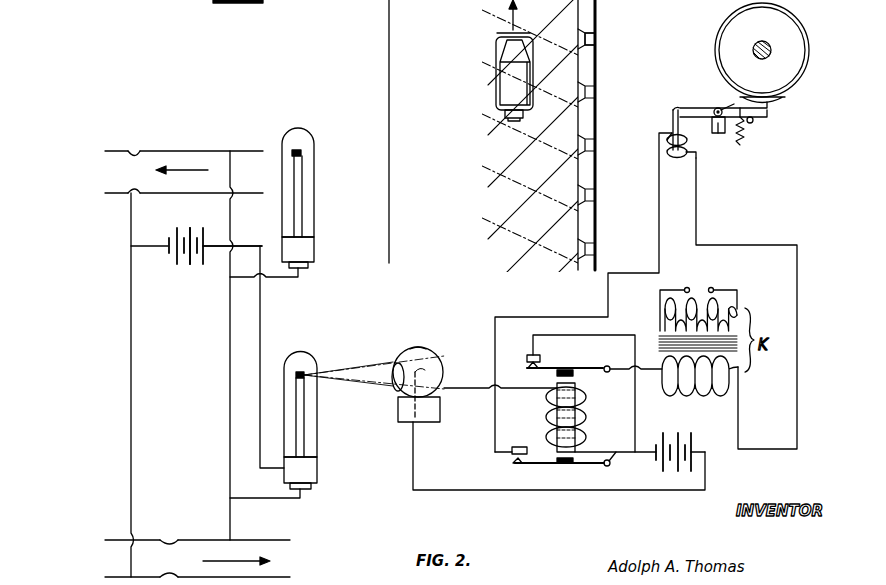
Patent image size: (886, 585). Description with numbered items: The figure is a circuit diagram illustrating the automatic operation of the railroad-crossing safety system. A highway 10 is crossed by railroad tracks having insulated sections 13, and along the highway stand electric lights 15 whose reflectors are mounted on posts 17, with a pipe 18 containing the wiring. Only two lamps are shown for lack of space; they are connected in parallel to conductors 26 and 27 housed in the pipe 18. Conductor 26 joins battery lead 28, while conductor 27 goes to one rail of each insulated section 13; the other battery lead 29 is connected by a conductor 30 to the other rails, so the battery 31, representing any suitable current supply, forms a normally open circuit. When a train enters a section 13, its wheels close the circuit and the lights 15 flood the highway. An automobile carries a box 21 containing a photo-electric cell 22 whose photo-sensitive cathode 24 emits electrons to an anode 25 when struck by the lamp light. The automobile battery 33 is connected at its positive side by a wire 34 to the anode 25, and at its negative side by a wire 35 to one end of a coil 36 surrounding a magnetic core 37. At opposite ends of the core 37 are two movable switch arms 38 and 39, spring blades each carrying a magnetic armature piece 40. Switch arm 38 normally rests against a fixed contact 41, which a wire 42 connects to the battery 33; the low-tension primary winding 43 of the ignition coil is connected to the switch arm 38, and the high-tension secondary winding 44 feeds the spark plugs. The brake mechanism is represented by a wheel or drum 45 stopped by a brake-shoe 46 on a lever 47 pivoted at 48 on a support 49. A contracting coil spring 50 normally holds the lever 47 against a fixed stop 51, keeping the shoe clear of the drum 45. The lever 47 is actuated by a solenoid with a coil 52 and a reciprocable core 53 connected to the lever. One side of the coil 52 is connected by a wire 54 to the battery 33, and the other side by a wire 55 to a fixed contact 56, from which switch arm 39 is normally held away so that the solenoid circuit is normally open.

The highway 10 is at (410, 131).
The insulated track section 13 is at (197, 364).
The electric light 15 is at (316, 170).
The post 17 is at (597, 45).
The pipe 18 is at (597, 116).
The box 21 is at (533, 68).
The photo-electric cell 22 is at (400, 408).
The photo-sensitive cathode 24 is at (425, 348).
The anode 25 is at (445, 362).
The conductor 26 is at (262, 316).
The conductor 27 is at (230, 360).
The battery lead 28 is at (214, 255).
The battery lead 29 is at (150, 244).
The conductor 30 is at (133, 382).
The battery 31 is at (187, 258).
The automobile battery 33 is at (675, 440).
The wire 34 is at (446, 489).
The wire 35 is at (618, 451).
The coil 36 is at (549, 420).
The magnetic core 37 is at (556, 395).
The switch arm 38 is at (580, 366).
The switch arm 39 is at (553, 468).
The magnetic armature piece 40 is at (577, 374).
The fixed contact 41 is at (527, 357).
The wire 42 is at (612, 335).
The primary winding 43 is at (694, 386).
The secondary winding 44 is at (690, 308).
The wheel or drum 45 is at (792, 43).
The brake-shoe 46 is at (778, 103).
The lever 47 is at (696, 107).
The pivot 48 is at (718, 108).
The support 49 is at (718, 136).
The contracting coil spring 50 is at (744, 150).
The fixed stop 51 is at (754, 123).
The solenoid coil 52 is at (677, 158).
The reciprocable core 53 is at (671, 125).
The wire 54 is at (797, 279).
The wire 55 is at (659, 240).
The fixed contact 56 is at (512, 455).